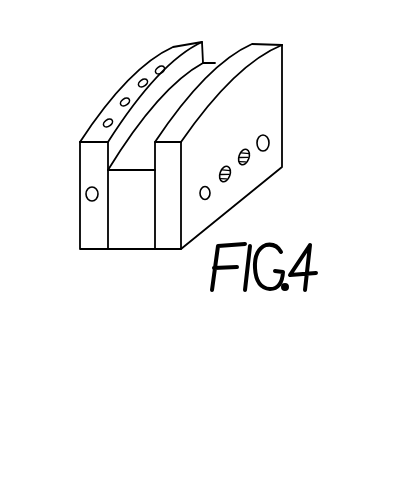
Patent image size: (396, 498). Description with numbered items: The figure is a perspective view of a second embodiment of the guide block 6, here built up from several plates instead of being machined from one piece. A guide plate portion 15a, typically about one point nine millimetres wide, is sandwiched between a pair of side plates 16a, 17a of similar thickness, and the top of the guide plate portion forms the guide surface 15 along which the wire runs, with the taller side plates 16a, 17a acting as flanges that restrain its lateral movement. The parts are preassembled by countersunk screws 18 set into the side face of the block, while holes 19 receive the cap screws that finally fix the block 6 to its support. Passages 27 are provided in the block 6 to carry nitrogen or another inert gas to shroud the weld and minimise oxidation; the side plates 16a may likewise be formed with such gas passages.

The block 6 is at (283, 100).
The guide surface 15 is at (209, 64).
The guide plate portion 15a is at (113, 238).
The side plate 16a is at (178, 49).
The side plate 17a is at (254, 57).
The screws 18 is at (242, 149).
The holes 19 is at (211, 193).
The passages 27 is at (86, 194).